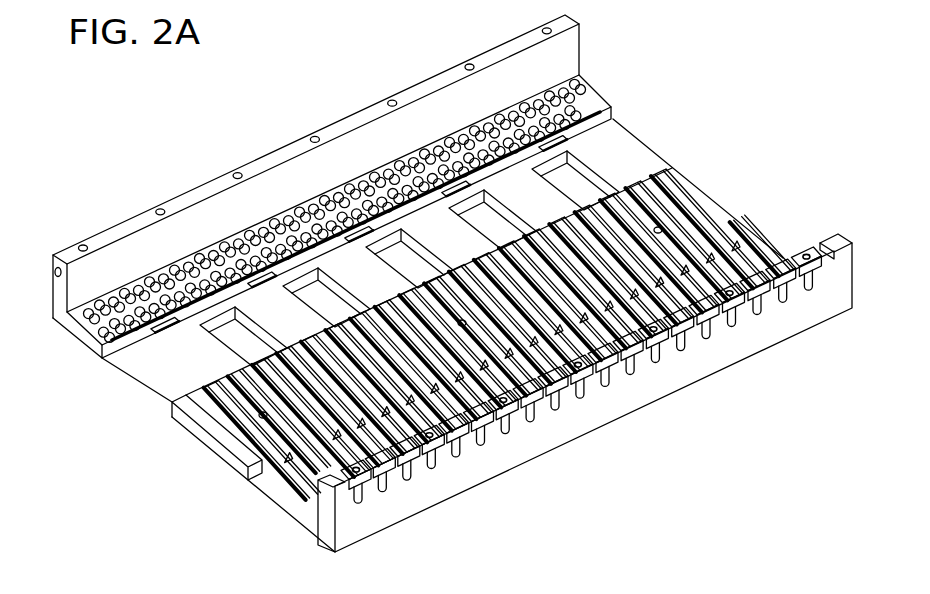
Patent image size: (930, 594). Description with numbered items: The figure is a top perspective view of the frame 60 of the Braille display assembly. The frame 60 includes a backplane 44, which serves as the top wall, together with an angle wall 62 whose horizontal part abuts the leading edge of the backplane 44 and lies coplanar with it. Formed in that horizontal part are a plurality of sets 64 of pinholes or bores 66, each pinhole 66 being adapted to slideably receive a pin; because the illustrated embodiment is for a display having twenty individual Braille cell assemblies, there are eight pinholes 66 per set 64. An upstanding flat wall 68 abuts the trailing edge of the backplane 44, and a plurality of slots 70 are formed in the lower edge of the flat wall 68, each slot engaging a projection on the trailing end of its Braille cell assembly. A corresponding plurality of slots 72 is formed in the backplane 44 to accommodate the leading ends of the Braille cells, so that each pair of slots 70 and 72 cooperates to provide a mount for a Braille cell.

The backplane 44 is at (180, 358).
The frame 60 is at (713, 118).
The angle wall 62 is at (418, 84).
The sets of pinholes 64 is at (595, 75).
The pinholes 66 is at (551, 93).
The upstanding flat wall 68 is at (681, 378).
The slots 70 is at (788, 258).
The slots 72 is at (680, 222).